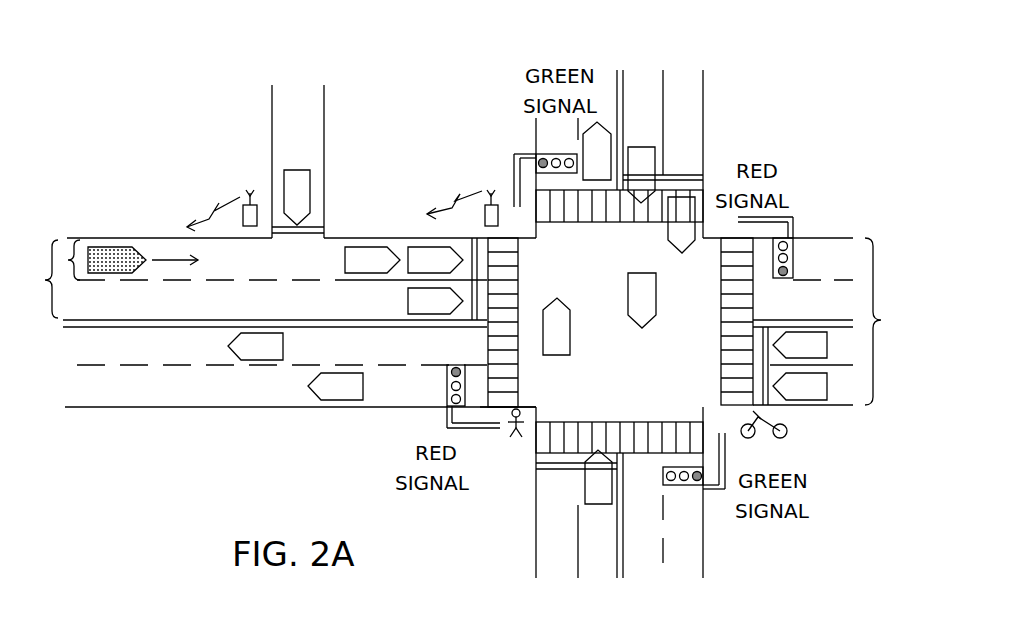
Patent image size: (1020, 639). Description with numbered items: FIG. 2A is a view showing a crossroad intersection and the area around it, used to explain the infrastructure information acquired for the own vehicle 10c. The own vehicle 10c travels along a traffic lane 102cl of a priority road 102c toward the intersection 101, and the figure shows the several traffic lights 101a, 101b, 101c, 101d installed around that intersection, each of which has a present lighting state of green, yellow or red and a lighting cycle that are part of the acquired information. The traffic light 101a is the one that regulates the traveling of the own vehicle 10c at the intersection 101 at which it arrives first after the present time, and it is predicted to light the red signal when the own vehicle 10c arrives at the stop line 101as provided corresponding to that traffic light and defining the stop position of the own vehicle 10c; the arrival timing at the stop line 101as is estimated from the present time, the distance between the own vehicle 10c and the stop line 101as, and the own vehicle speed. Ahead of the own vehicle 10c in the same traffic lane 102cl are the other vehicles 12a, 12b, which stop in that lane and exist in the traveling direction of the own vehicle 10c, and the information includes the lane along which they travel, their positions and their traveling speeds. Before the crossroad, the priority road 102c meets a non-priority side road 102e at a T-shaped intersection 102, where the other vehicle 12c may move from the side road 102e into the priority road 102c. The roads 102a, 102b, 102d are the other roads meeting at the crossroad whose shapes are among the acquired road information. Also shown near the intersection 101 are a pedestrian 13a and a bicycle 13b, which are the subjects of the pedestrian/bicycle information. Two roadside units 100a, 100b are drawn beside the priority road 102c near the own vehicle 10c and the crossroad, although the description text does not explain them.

The intersection 101 is at (638, 362).
The traffic light 101a is at (795, 257).
The traffic light 101b is at (683, 487).
The traffic light 101c is at (447, 393).
The traffic light 101d is at (543, 155).
The stop line 101as is at (476, 313).
The T-shaped intersection 102 is at (315, 271).
The road 102a is at (881, 320).
The road 102b is at (704, 582).
The priority road 102c is at (45, 280).
The traffic lane 102cl is at (68, 260).
The road 102d is at (704, 56).
The non-priority road 102e is at (324, 132).
The own vehicle 10c is at (112, 250).
The other vehicle 12a is at (362, 248).
The other vehicle 12b is at (418, 248).
The other vehicle 12c is at (305, 192).
The roadside unit 100a is at (497, 196).
The roadside unit 100b is at (258, 196).
The pedestrian 13a is at (516, 444).
The bicycle 13b is at (798, 438).